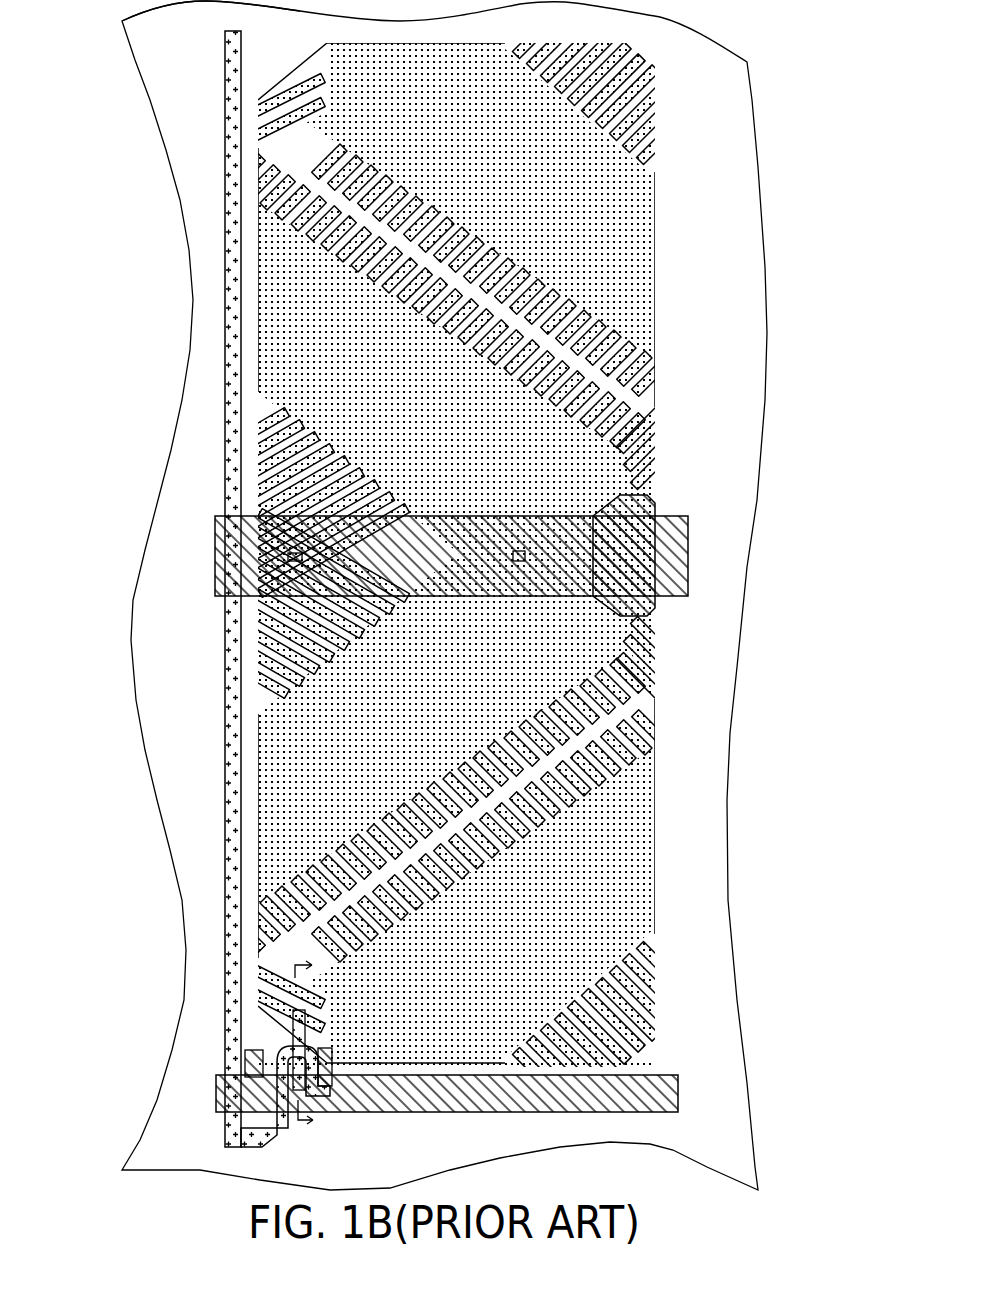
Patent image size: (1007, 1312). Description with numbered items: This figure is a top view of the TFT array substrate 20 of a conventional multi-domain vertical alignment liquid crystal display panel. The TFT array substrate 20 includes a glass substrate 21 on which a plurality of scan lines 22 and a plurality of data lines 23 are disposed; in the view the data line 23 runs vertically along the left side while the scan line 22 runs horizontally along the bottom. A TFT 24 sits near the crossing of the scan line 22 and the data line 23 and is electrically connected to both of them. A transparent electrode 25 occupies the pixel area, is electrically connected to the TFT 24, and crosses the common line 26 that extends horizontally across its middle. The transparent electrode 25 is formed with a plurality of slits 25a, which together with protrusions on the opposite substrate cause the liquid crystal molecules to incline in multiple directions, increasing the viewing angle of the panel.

The TFT array substrate 20 is at (830, 1138).
The glass substrate 21 is at (167, 47).
The scan line 22 is at (650, 1095).
The data line 23 is at (233, 137).
The TFT 24 is at (223, 1067).
The transparent electrode 25 is at (487, 555).
The slit 25a is at (568, 739).
The common line 26 is at (216, 552).